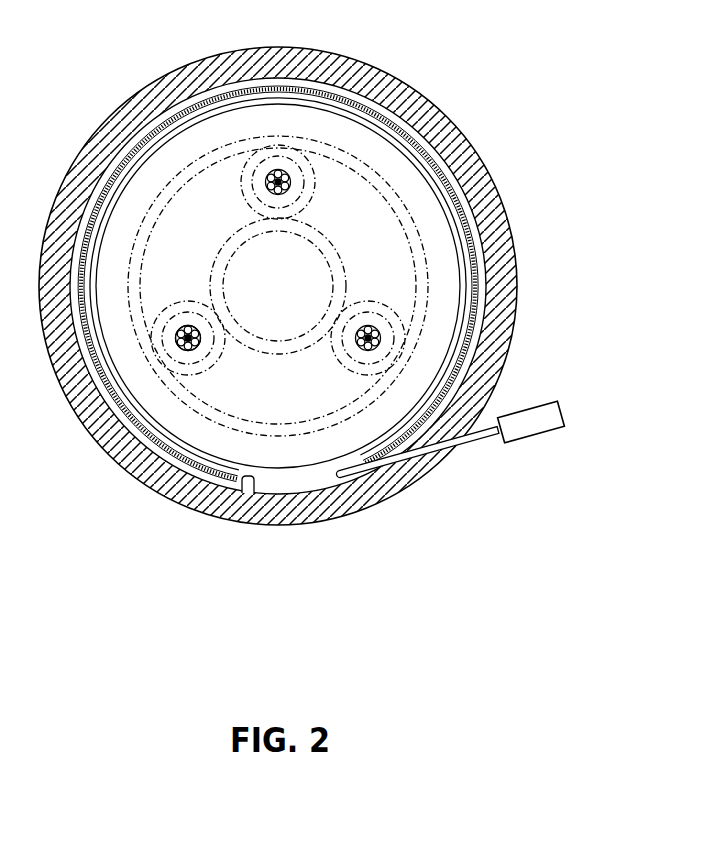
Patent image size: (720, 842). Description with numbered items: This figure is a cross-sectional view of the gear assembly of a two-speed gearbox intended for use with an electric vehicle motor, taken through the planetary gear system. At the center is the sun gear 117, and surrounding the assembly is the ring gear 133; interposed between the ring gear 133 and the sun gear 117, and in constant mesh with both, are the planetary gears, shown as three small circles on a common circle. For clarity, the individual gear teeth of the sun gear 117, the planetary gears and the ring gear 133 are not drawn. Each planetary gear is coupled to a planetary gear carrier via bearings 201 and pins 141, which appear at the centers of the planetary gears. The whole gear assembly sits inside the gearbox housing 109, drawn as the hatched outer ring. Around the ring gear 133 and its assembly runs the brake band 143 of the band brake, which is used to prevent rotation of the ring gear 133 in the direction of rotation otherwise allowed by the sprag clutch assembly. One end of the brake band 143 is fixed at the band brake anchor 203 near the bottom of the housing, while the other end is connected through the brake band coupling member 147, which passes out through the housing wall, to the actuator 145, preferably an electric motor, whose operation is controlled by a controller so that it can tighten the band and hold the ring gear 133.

The gearbox housing 109 is at (340, 50).
The brake band 143 is at (444, 156).
The ring gear 133 is at (447, 262).
The sun gear 117 is at (300, 298).
The pins 141 is at (188, 326).
The bearings 201 is at (190, 351).
The brake band coupling member 147 is at (427, 452).
The actuator 145 is at (543, 412).
The band brake anchor 203 is at (248, 482).